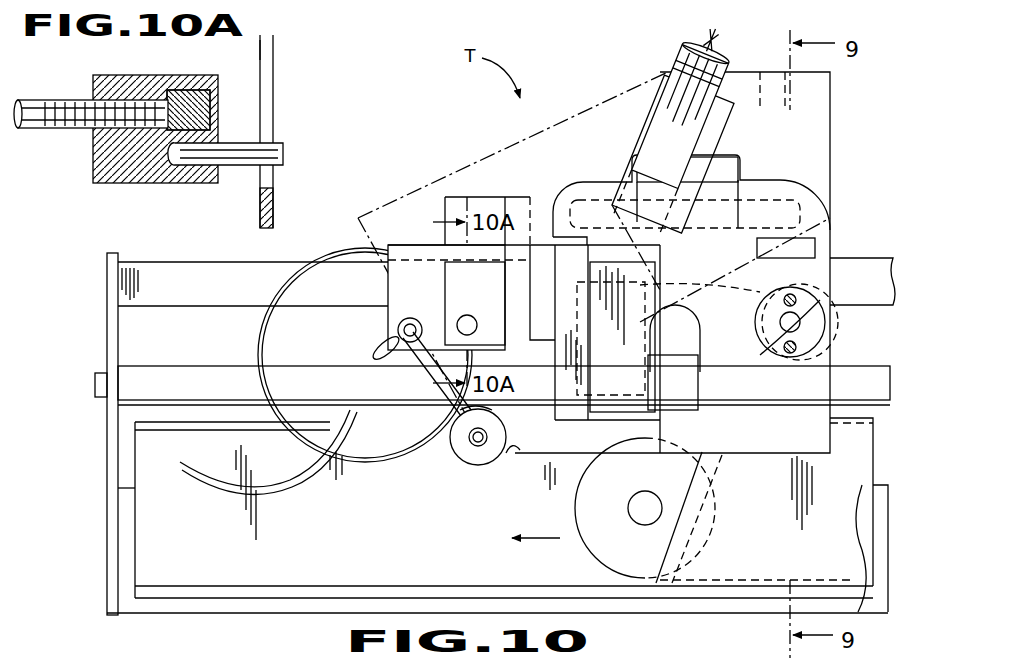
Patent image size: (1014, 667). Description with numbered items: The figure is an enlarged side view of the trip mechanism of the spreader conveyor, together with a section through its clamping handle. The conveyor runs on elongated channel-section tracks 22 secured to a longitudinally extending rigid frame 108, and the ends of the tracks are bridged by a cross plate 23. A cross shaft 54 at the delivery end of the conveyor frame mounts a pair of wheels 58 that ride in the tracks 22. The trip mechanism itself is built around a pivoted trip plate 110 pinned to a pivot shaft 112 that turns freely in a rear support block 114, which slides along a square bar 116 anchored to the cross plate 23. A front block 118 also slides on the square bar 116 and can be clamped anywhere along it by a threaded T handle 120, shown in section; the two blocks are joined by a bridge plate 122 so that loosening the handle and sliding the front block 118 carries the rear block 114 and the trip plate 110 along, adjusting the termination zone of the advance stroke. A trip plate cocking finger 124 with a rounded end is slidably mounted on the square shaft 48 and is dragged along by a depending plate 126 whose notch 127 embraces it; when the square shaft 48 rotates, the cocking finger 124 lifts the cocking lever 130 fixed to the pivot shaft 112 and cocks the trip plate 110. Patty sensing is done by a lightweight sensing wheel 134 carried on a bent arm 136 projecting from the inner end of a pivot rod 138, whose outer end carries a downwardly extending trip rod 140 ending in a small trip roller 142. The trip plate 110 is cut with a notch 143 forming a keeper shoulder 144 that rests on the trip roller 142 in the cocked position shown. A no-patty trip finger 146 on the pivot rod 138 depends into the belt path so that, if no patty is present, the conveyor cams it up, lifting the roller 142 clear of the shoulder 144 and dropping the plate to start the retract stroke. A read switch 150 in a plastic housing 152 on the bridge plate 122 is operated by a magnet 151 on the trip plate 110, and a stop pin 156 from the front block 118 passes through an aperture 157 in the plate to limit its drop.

In FIG. 10, the tracks 22 is at (183, 551).
In FIG. 10, the cross plate 23 is at (107, 347).
In FIG. 10, the square shaft 48 is at (851, 372).
In FIG. 10, the cross shaft 54 is at (641, 516).
In FIG. 10, the wheels 58 is at (580, 504).
In FIG. 10, the rigid frame 108 is at (755, 612).
In FIG. 10A, the trip plate 110 is at (262, 198).
In FIG. 10, the trip plate 110 is at (708, 450).
In FIG. 10, the pivot shaft 112 is at (800, 322).
In FIG. 10, the rear support block 114 is at (830, 226).
In FIG. 10A, the square bar 116 is at (185, 97).
In FIG. 10, the square bar 116 is at (852, 258).
In FIG. 10A, the front block 118 is at (93, 150).
In FIG. 10, the front block 118 is at (400, 284).
In FIG. 10A, the threaded T handle 120 is at (52, 100).
In FIG. 10, the bridge plate 122 is at (440, 240).
In FIG. 10, the trip plate cocking finger 124 is at (700, 413).
In FIG. 10, the plate 126 is at (603, 261).
In FIG. 10, the notch 127 is at (652, 348).
In FIG. 10, the cocking lever 130 is at (700, 288).
In FIG. 10, the sensing wheel 134 is at (262, 334).
In FIG. 10, the bent arm 136 is at (378, 352).
In FIG. 10, the pivot rod 138 is at (405, 322).
In FIG. 10, the trip rod 140 is at (432, 380).
In FIG. 10, the trip roller 142 is at (500, 436).
In FIG. 10, the notch 143 is at (510, 452).
In FIG. 10, the keeper shoulder 144 is at (470, 414).
In FIG. 10, the no-patty trip finger 146 is at (285, 486).
In FIG. 10, the read switch 150 is at (780, 206).
In FIG. 10, the magnet 151 is at (645, 108).
In FIG. 10, the plastic housing 152 is at (600, 182).
In FIG. 10A, the stop pin 156 is at (283, 151).
In FIG. 10, the stop pin 156 is at (470, 316).
In FIG. 10A, the aperture 157 is at (270, 97).
In FIG. 10, the aperture 157 is at (520, 292).